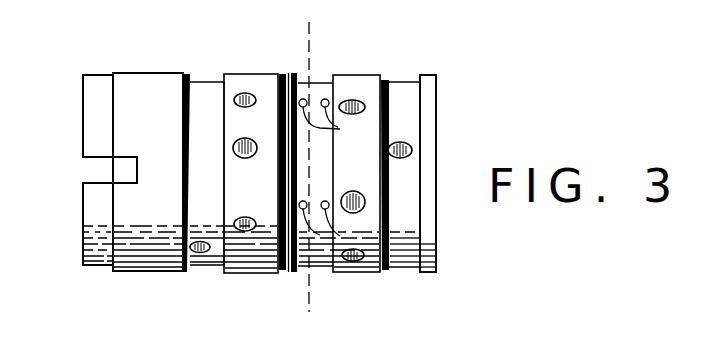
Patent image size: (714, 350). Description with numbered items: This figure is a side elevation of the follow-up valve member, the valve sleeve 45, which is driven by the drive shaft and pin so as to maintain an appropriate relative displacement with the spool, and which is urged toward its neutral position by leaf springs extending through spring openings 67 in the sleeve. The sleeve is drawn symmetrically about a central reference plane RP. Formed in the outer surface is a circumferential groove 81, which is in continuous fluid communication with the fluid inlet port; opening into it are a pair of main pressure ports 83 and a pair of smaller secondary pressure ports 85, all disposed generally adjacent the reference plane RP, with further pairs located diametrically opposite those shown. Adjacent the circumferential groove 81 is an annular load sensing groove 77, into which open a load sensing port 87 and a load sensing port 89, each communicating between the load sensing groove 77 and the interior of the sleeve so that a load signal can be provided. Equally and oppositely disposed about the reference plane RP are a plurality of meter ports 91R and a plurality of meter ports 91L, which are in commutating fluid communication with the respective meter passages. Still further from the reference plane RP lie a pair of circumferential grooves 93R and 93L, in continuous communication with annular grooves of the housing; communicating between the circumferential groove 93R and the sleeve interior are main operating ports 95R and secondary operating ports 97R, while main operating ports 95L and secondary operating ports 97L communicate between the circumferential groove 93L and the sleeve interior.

The central reference plane RP is at (311, 36).
The valve sleeve 45 is at (455, 120).
The spring openings 67 is at (92, 183).
The annular load sensing groove 77 is at (280, 188).
The circumferential groove 81 is at (316, 163).
The main pressure ports 83 is at (326, 172).
The secondary pressure ports 85 is at (322, 236).
The load sensing port 87 is at (281, 92).
The load sensing port 89 is at (283, 216).
The meter ports 91L is at (238, 224).
The meter ports 91R is at (350, 100).
The circumferential groove 93L is at (203, 112).
The circumferential groove 93R is at (405, 209).
The main operating ports 95L is at (207, 252).
The main operating ports 95R is at (412, 152).
The secondary operating ports 97L is at (203, 146).
The secondary operating ports 97R is at (407, 254).